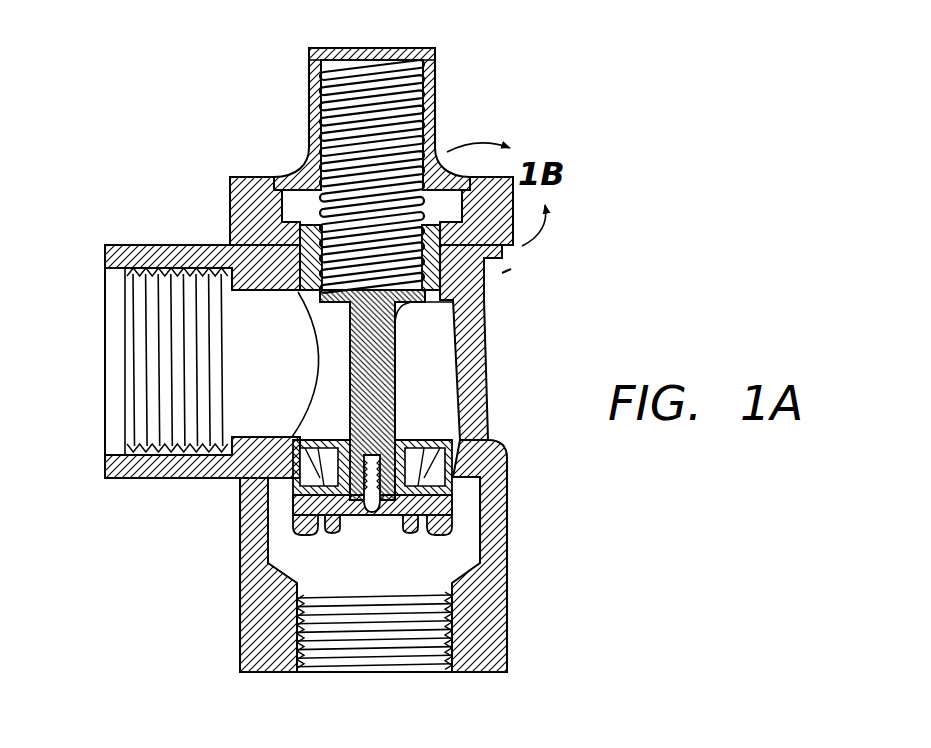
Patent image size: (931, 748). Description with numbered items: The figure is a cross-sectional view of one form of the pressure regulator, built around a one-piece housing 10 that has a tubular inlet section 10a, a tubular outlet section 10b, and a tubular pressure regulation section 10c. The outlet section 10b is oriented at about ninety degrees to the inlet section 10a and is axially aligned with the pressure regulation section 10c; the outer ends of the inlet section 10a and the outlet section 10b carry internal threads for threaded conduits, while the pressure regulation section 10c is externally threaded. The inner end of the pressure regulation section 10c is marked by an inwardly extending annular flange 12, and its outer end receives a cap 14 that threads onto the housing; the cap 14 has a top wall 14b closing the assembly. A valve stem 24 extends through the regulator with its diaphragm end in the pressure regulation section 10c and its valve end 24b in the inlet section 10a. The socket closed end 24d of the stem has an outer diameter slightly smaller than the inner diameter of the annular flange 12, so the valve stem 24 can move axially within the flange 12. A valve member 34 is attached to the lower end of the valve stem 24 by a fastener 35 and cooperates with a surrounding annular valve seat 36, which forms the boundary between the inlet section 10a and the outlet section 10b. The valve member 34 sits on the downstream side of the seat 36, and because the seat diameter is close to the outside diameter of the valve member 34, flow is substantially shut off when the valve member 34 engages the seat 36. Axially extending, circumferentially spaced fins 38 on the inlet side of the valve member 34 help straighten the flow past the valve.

The housing 10 is at (489, 350).
The inlet section 10a is at (125, 480).
The outlet section 10b is at (507, 613).
The pressure regulation section 10c is at (232, 180).
The annular flange 12 is at (494, 296).
The cap 14 is at (406, 151).
The cap top wall 14b is at (432, 58).
The valve stem 24 is at (399, 345).
The valve end 24b is at (430, 420).
The socket closed end 24d is at (325, 300).
The valve member 34 is at (463, 494).
The fastener 35 is at (372, 504).
The valve seat 36 is at (240, 571).
The fins 38 is at (488, 440).